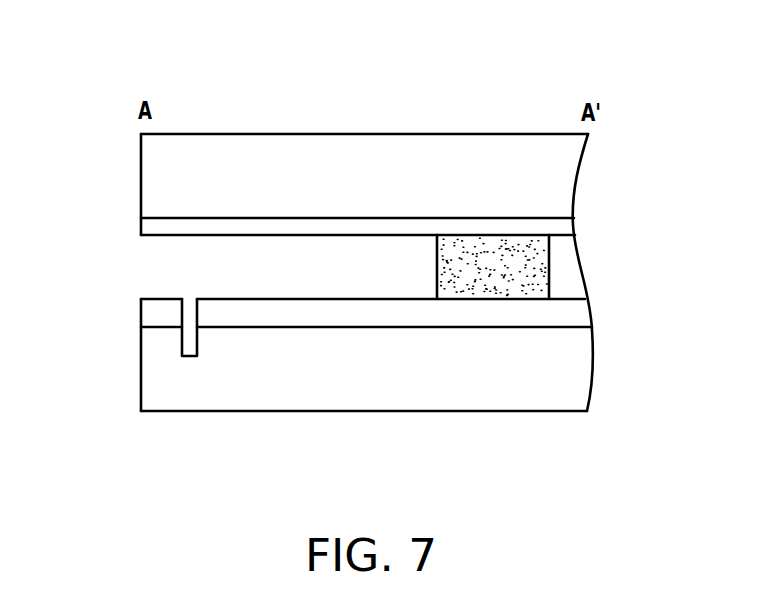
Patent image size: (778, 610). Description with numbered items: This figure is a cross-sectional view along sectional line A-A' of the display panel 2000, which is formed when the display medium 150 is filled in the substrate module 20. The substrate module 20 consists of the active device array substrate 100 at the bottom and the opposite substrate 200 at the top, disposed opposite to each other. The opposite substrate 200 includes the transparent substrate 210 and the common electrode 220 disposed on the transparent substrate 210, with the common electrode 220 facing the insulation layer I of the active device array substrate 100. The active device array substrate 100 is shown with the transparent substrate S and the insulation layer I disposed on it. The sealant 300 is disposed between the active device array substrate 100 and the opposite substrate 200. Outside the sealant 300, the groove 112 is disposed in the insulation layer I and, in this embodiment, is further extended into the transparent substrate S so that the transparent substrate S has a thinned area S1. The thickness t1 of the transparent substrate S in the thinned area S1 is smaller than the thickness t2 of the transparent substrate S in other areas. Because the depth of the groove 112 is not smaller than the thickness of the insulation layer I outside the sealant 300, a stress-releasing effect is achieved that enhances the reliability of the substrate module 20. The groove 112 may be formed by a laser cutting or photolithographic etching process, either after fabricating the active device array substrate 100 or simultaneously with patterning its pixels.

The display panel 2000 is at (608, 483).
The substrate module 20 is at (664, 175).
The opposite substrate 200 is at (606, 133).
The transparent substrate 210 is at (492, 170).
The common electrode 220 is at (548, 225).
The sealant 300 is at (527, 263).
The active device array substrate 100 is at (606, 297).
The groove 112 is at (194, 290).
The display medium 150 is at (567, 290).
The insulation layer I is at (425, 318).
The transparent substrate S is at (488, 382).
The thickness of the transparent substrate in the thinned area t1 is at (189, 357).
The thickness of the transparent substrate in other areas t2 is at (243, 328).
The thinned area S1 is at (203, 418).